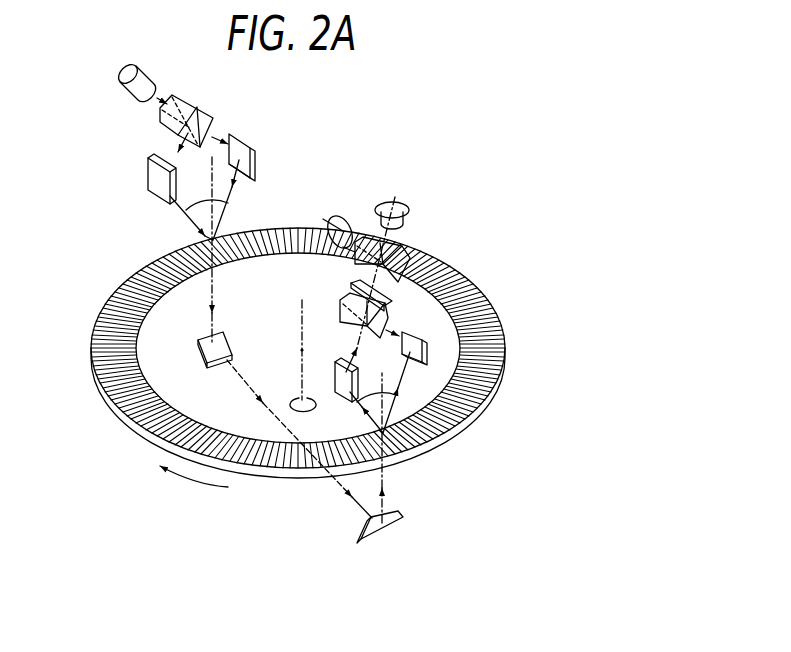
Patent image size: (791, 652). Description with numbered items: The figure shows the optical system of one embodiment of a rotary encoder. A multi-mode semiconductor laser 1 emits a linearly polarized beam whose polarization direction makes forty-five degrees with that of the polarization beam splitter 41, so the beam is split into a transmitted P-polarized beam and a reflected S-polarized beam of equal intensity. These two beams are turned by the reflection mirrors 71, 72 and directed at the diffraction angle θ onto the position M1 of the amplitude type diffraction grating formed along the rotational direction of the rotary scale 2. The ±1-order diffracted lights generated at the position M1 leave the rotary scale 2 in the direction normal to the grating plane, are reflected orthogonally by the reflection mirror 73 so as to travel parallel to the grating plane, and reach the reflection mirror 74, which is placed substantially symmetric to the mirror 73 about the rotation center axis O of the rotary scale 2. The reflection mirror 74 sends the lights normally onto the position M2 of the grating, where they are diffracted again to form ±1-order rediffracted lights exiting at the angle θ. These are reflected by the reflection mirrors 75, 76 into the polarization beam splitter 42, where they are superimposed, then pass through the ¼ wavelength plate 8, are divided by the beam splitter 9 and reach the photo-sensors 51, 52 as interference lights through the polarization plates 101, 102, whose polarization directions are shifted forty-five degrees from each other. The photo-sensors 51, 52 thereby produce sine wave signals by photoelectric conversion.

The multi-mode semiconductor laser 1 is at (146, 76).
The rotary scale 2 is at (98, 327).
The ¼ wavelength plate 8 is at (395, 303).
The beam splitter 9 is at (433, 252).
The polarization beam splitter 41 is at (207, 112).
The polarization beam splitter 42 is at (345, 313).
The photo-sensor 51 is at (408, 206).
The photo-sensor 52 is at (340, 216).
The reflection mirror 71 is at (148, 178).
The reflection mirror 72 is at (257, 152).
The reflection mirror 73 is at (203, 338).
The reflection mirror 74 is at (380, 537).
The reflection mirror 75 is at (352, 400).
The reflection mirror 76 is at (413, 363).
The polarization plate 101 is at (402, 248).
The polarization plate 102 is at (343, 260).
The position on the diffraction grating M1 is at (227, 237).
The position on the diffraction grating M2 is at (432, 452).
The rotation center axis O is at (300, 350).